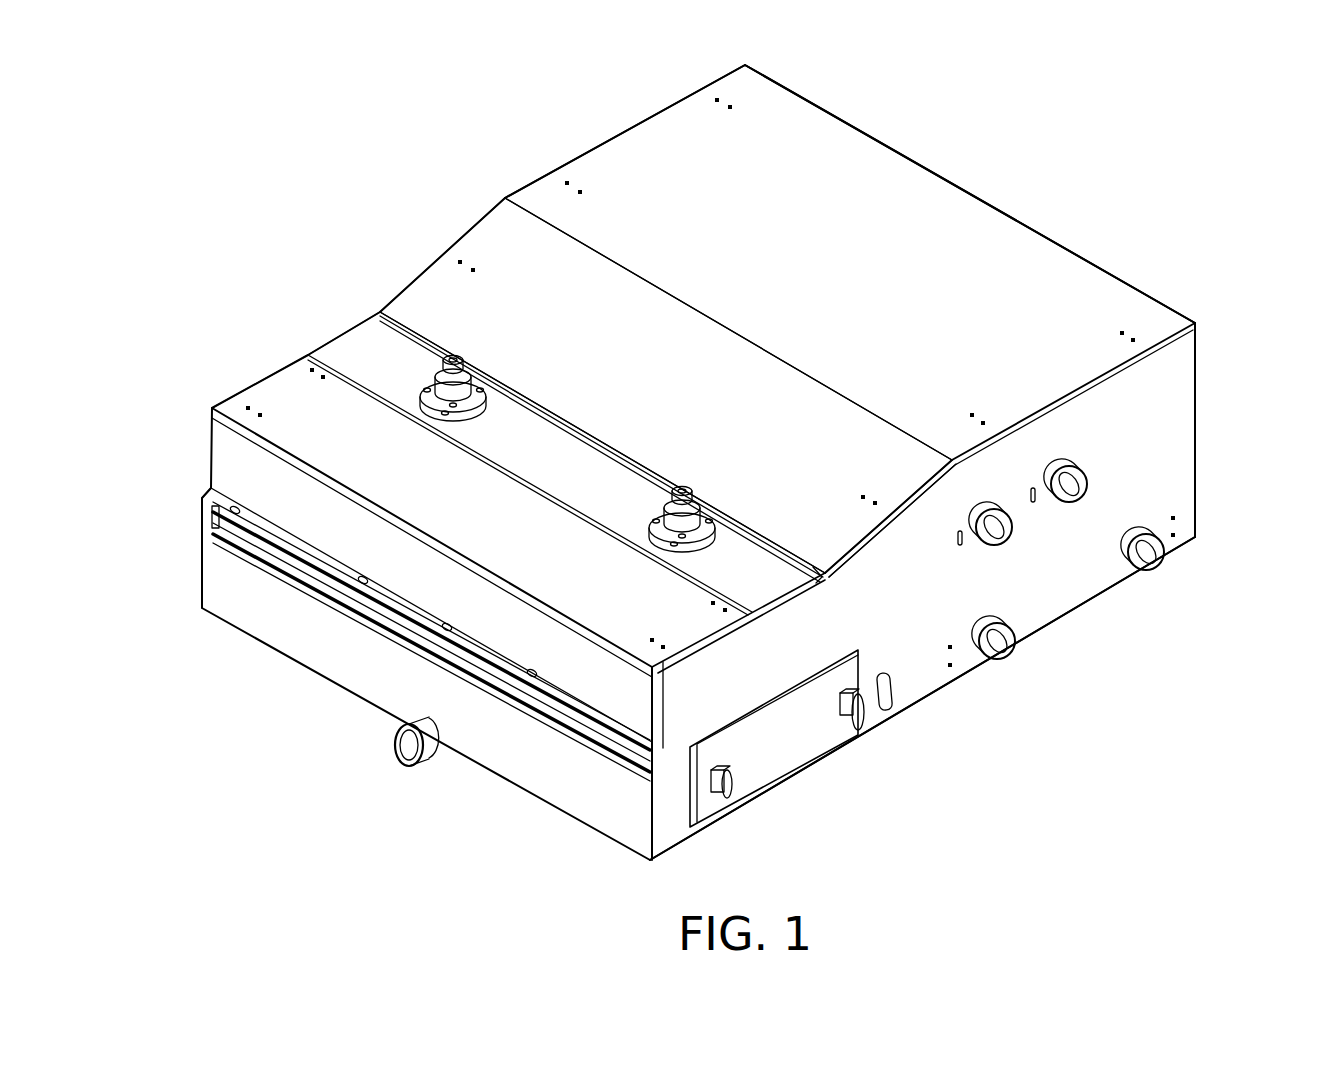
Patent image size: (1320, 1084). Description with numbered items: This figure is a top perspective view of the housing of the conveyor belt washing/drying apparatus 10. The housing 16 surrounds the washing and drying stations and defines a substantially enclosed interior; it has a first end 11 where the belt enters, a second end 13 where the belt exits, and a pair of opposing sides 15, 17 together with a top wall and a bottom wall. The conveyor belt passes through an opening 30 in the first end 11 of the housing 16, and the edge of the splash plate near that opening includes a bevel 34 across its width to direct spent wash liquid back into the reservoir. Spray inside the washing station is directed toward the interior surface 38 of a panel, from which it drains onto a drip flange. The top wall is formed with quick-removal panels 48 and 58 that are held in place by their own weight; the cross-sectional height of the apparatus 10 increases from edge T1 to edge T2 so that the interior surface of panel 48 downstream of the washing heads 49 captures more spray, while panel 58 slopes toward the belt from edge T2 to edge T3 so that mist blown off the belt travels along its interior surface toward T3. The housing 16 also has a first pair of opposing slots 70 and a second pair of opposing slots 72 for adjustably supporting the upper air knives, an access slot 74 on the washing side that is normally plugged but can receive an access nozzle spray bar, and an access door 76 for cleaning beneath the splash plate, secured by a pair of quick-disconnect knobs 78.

The conveyor belt washing/drying apparatus 10 is at (298, 165).
The first end 11 is at (370, 700).
The second end 13 is at (1197, 426).
The side 15 is at (613, 137).
The housing 16 is at (238, 372).
The side 17 is at (1063, 593).
The belt opening 30 is at (562, 698).
The bevel 34 is at (320, 563).
The interior surface 38 is at (205, 455).
The panel 48 is at (583, 353).
The washing heads 49 is at (398, 362).
The panel 58 is at (798, 240).
The first pair of opposing slots 70 is at (998, 535).
The second pair of opposing slots 72 is at (1075, 492).
The access slot 74 is at (890, 692).
The access door 76 is at (790, 755).
The quick-disconnect knobs 78 is at (860, 715).
The edge T1 is at (403, 322).
The edge T2 is at (527, 207).
The edge T3 is at (800, 93).